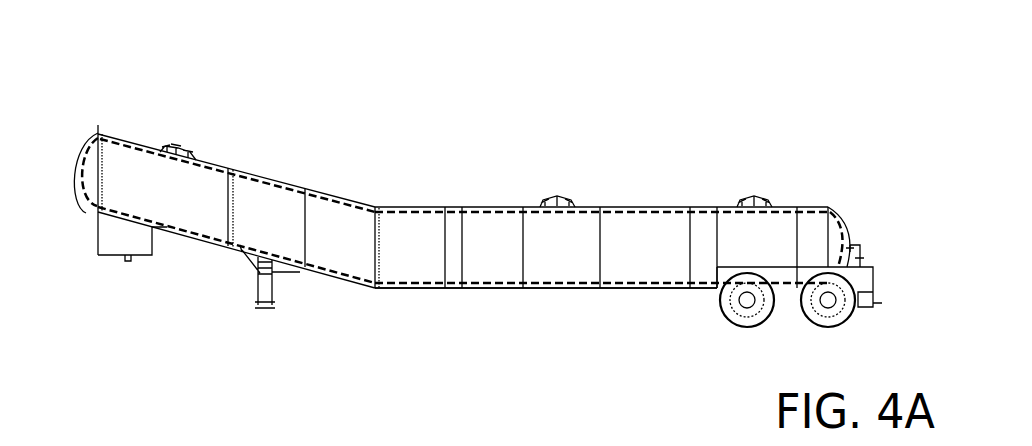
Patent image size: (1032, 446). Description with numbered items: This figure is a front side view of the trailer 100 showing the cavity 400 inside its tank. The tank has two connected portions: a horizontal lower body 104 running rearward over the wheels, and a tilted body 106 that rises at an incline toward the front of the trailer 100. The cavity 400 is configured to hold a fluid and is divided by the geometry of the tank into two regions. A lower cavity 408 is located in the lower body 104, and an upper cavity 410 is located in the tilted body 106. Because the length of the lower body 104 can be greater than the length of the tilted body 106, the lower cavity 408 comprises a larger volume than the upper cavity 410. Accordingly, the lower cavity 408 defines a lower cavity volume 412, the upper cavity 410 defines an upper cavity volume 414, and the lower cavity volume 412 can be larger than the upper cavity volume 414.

The trailer 100 is at (728, 95).
The tilted body 106 is at (208, 160).
The cavity 400 is at (477, 208).
The lower body 104 is at (445, 289).
The upper cavity 410 is at (175, 192).
The upper cavity volume 414 is at (164, 190).
The lower cavity 408 is at (662, 255).
The lower cavity volume 412 is at (658, 247).